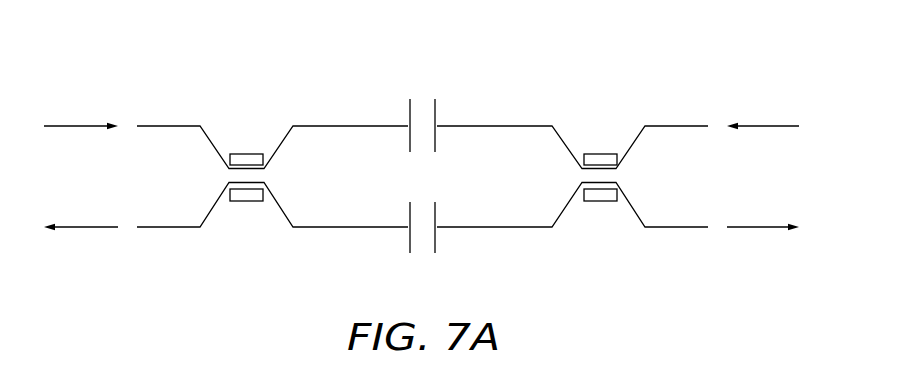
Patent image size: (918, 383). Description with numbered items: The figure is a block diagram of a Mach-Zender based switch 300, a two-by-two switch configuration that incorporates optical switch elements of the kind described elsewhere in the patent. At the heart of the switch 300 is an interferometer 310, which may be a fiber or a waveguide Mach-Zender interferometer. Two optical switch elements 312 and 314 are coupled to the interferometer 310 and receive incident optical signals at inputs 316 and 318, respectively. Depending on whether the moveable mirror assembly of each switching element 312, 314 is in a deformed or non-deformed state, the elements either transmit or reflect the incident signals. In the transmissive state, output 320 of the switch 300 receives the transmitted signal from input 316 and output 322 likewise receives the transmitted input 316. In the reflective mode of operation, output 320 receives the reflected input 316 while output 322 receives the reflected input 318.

The Mach-Zender based switch 300 is at (421, 153).
The interferometer 310 is at (487, 242).
The optical switch element 312 is at (398, 238).
The optical switch element 314 is at (445, 113).
The input 316 is at (74, 125).
The input 318 is at (768, 123).
The output 320 is at (74, 229).
The output 322 is at (768, 229).